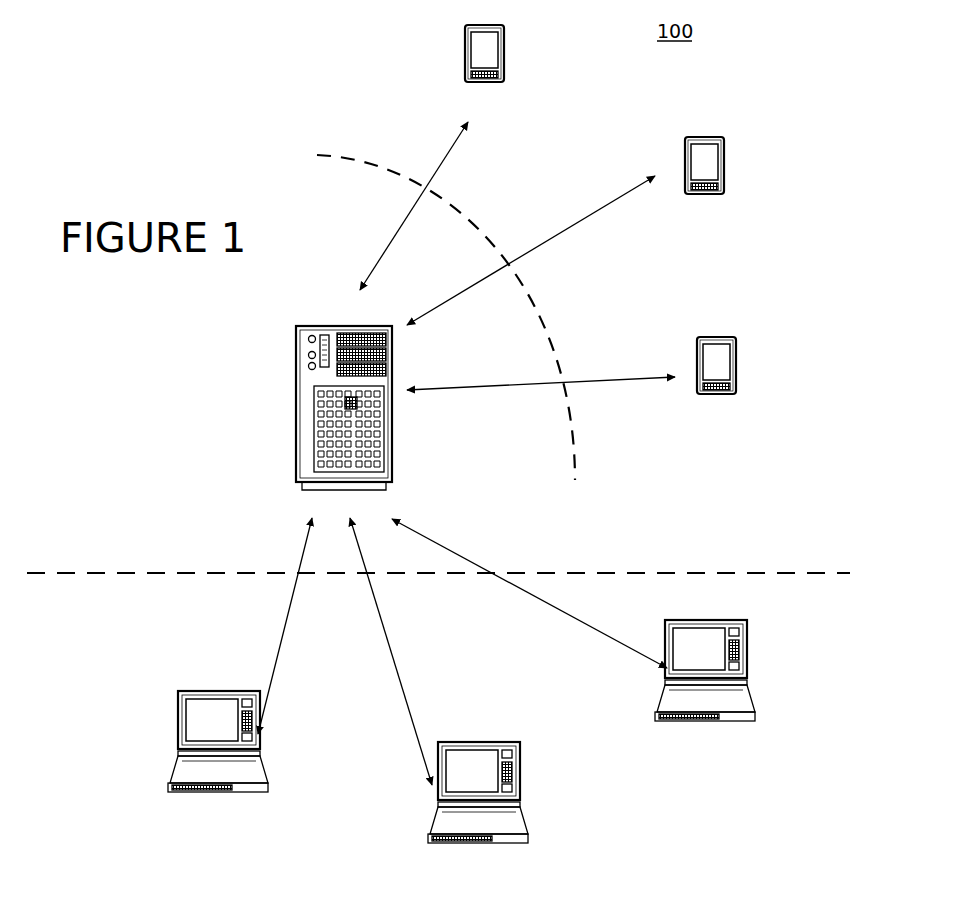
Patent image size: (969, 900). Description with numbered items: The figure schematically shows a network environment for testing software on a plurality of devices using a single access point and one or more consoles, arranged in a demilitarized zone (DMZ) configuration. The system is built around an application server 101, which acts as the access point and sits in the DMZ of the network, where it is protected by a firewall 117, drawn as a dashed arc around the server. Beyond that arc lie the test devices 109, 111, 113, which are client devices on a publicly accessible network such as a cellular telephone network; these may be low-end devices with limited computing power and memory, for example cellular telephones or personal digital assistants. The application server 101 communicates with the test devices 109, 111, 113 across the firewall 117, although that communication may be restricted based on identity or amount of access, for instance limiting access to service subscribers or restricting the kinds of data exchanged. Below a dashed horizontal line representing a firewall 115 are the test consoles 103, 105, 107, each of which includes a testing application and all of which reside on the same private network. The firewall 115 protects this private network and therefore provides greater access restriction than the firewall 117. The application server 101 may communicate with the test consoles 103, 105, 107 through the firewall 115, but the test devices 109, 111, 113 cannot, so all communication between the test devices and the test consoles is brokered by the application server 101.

The application server 101 is at (292, 327).
The test console 103 is at (478, 742).
The test console 105 is at (218, 678).
The test console 107 is at (707, 622).
The test device 109 is at (462, 33).
The test device 111 is at (690, 127).
The test device 113 is at (690, 325).
The firewall 115 is at (155, 572).
The firewall 117 is at (336, 153).